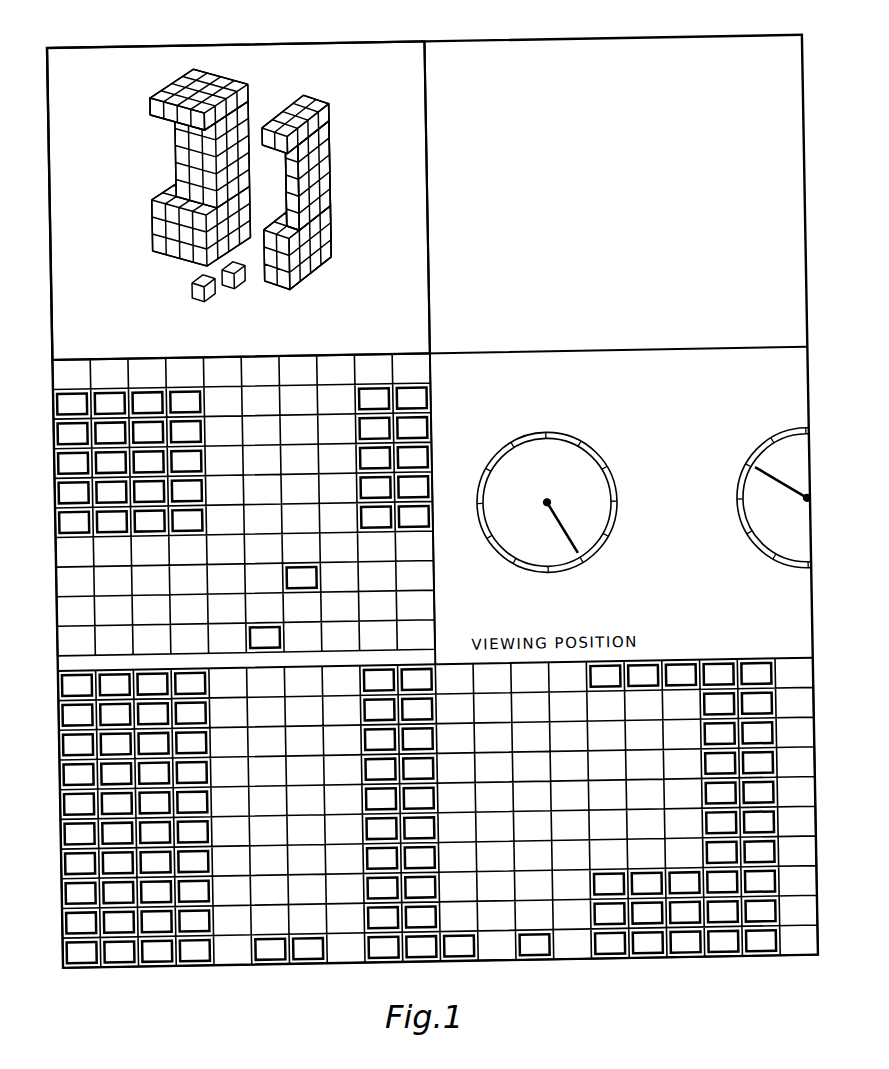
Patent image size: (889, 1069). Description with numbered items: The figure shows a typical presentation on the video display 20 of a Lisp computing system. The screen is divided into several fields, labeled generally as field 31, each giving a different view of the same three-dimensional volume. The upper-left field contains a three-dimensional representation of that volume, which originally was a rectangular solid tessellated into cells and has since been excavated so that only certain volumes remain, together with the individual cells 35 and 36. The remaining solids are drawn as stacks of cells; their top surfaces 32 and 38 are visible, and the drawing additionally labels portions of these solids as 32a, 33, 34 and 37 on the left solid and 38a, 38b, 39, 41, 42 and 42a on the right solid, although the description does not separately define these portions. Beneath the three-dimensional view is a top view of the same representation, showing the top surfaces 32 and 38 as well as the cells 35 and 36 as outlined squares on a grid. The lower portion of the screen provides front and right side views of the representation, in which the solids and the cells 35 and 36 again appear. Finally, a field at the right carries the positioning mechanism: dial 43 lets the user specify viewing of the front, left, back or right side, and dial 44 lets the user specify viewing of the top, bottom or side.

The video display 20 is at (784, 339).
The display field 31 is at (110, 12).
The top surface 32 is at (145, 246).
The bottom layer of top block 32a is at (109, 400).
The column of first object 33 is at (128, 105).
The base block of first object 34 is at (110, 185).
The cell 35 is at (148, 257).
The cell 36 is at (269, 427).
The notch under top block 37 is at (244, 107).
The top surface 38 is at (259, 54).
The left face of second object column 38a is at (238, 144).
The right face of second object top block 38b is at (281, 64).
The column of second object 39 is at (340, 465).
The right face of second object column 41 is at (282, 143).
The base block of second object 42 is at (330, 563).
The right face of second object base 42a is at (282, 195).
The dial 43 is at (526, 406).
The dial 44 is at (700, 512).